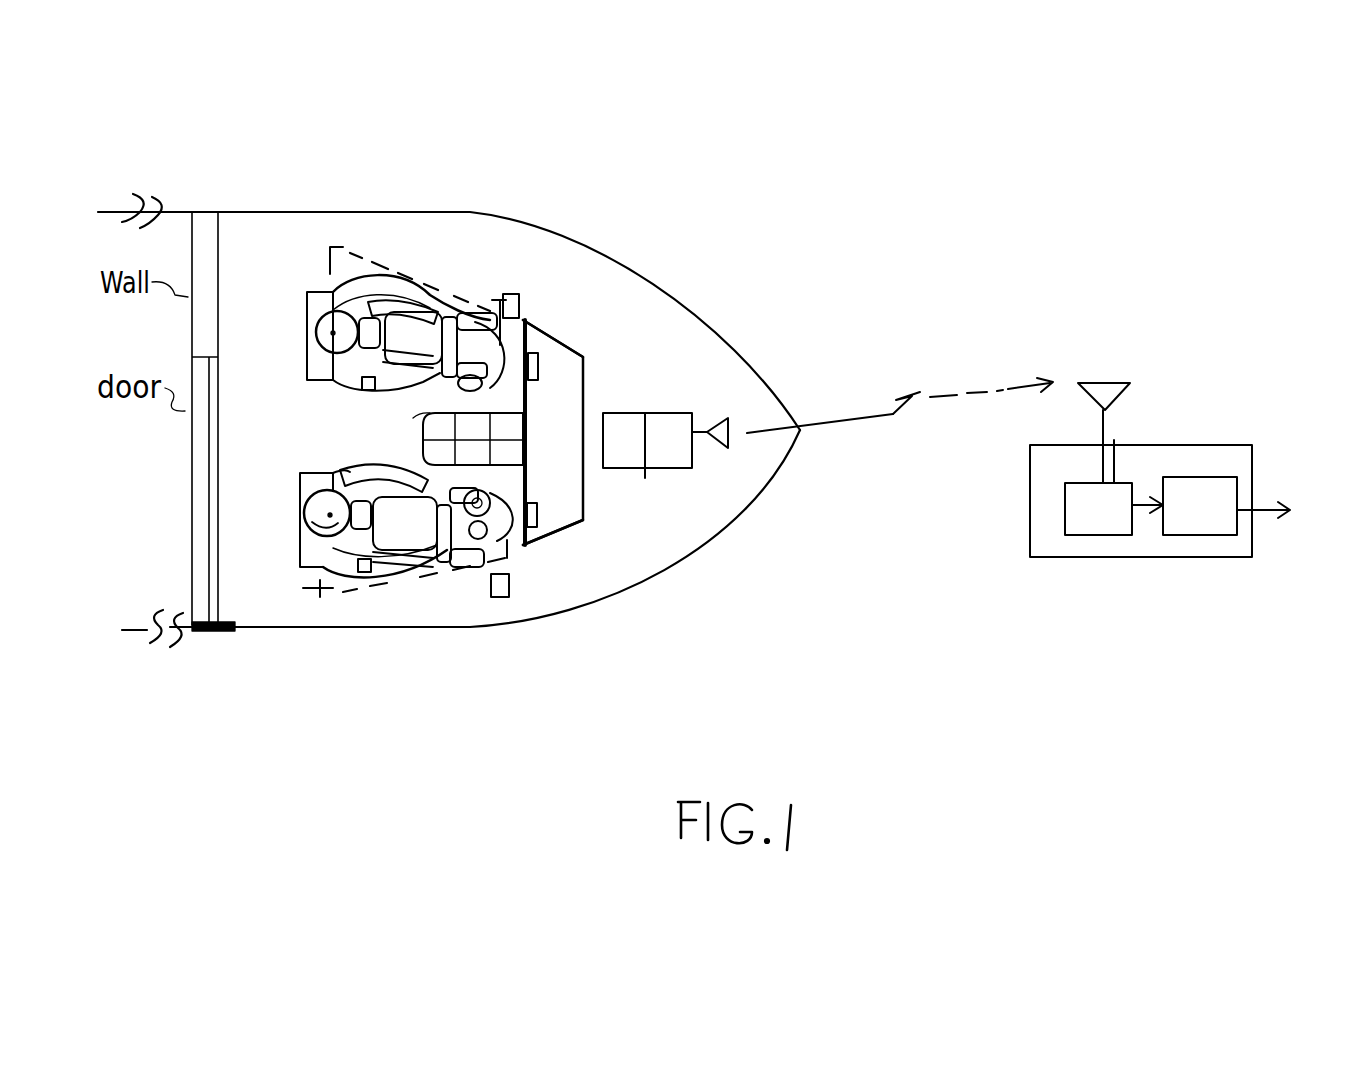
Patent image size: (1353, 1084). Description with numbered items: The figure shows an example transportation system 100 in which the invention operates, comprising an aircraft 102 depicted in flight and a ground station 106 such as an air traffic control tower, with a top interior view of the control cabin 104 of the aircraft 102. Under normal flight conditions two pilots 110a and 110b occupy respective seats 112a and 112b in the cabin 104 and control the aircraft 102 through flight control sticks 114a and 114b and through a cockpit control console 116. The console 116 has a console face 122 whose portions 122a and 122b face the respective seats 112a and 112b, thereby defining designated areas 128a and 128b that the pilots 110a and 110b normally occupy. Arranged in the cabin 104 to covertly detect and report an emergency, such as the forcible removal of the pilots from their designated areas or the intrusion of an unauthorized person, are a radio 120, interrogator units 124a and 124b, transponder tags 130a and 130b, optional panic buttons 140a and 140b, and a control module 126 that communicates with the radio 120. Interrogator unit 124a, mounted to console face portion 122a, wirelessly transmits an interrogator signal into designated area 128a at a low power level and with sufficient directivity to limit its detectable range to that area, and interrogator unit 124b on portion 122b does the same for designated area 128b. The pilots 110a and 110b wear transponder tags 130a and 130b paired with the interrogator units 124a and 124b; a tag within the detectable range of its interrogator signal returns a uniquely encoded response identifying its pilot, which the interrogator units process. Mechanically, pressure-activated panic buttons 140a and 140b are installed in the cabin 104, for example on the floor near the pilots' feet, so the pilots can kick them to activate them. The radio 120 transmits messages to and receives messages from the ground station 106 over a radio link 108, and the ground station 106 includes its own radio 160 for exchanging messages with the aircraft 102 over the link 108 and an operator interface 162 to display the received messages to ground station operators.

The transportation system 100 is at (916, 195).
The aircraft 102 is at (449, 498).
The control cabin 104 is at (318, 627).
The ground station 106 is at (1040, 584).
The radio link 108 is at (857, 427).
The pilot 110a is at (362, 339).
The pilot 110b is at (353, 515).
The seat 112a is at (363, 326).
The seat 112b is at (337, 507).
The flight control stick 114a is at (490, 369).
The flight control stick 114b is at (485, 503).
The cockpit control console 116 is at (583, 378).
The radio 120 is at (672, 470).
The console face 122 is at (447, 439).
The console face portion 122a is at (530, 322).
The console face portion 122b is at (530, 548).
The interrogator unit 124a is at (567, 388).
The interrogator unit 124b is at (566, 491).
The control module 126 is at (613, 470).
The designated area 128a is at (417, 274).
The designated area 128b is at (400, 583).
The transponder tag 130a is at (353, 407).
The transponder tag 130b is at (297, 585).
The panic button 140a is at (517, 297).
The panic button 140b is at (510, 590).
The radio 160 is at (1122, 484).
The operator interface 162 is at (1200, 477).